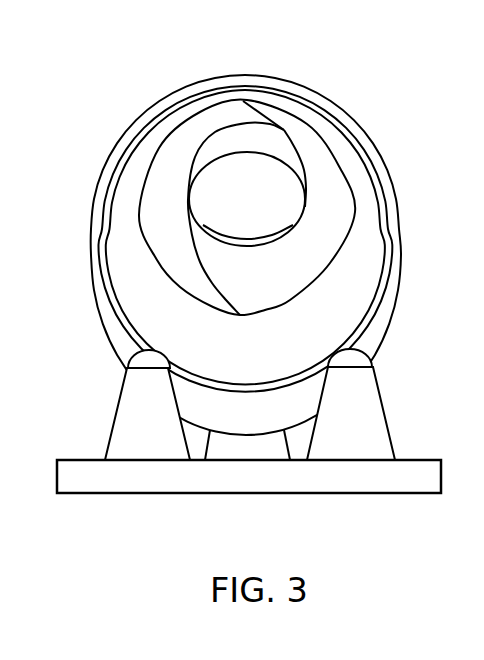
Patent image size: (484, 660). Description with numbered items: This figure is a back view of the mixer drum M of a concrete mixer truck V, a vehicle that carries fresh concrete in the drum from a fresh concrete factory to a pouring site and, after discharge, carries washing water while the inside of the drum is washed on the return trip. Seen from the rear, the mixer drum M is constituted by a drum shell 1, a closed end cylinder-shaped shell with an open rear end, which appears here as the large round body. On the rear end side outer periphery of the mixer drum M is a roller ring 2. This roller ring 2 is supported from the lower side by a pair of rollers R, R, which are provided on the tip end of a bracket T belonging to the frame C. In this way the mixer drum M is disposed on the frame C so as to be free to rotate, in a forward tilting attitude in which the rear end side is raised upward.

The concrete mixer truck V is at (169, 60).
The mixer drum M is at (106, 160).
The drum shell 1 is at (93, 265).
The roller ring 2 is at (386, 181).
The roller R is at (138, 365).
The bracket T is at (378, 437).
The frame C is at (265, 480).